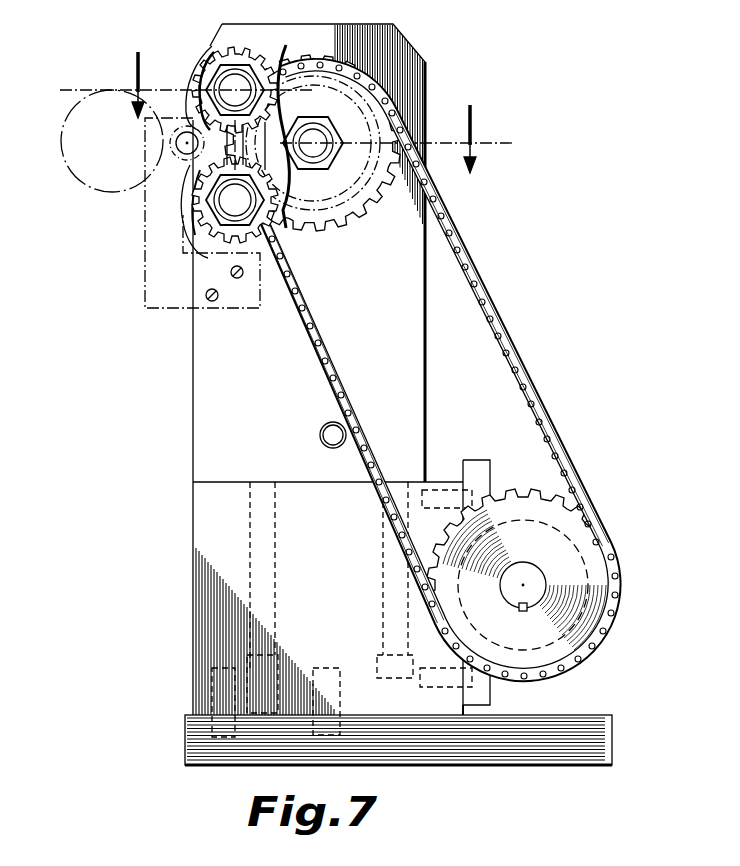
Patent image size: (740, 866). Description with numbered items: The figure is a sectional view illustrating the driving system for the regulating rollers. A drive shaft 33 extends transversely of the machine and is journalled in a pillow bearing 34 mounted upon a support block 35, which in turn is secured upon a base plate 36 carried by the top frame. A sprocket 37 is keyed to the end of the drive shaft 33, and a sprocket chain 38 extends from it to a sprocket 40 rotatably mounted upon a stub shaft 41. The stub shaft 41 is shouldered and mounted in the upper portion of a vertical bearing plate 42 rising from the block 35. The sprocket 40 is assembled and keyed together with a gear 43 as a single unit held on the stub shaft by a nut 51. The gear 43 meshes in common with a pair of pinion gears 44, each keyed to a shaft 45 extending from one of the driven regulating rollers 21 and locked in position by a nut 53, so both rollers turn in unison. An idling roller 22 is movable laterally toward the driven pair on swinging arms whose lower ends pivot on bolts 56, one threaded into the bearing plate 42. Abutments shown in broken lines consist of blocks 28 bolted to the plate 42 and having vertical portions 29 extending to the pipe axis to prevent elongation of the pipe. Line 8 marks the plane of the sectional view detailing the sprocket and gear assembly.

The section line 8— 8 is at (305, 112).
The driven regulating rollers 21 is at (183, 219).
The idling roller 22 is at (72, 108).
The block 28 is at (215, 310).
The vertical portion 29 is at (145, 210).
The drive shaft 33 is at (519, 597).
The pillow bearing 34 is at (474, 465).
The support block 35 is at (205, 567).
The base plate 36 is at (200, 739).
The sprocket 37 is at (526, 497).
The sprocket chain 38 is at (504, 322).
The sprocket 40 is at (350, 214).
The stub shaft 41 is at (318, 152).
The vertical bearing plate 42 is at (410, 372).
The gear 43 is at (366, 192).
The pinion gear 44 is at (258, 74).
The shaft 45 is at (236, 88).
The nut 51 is at (331, 151).
The nut 53 is at (219, 60).
The bolt 56 is at (330, 437).